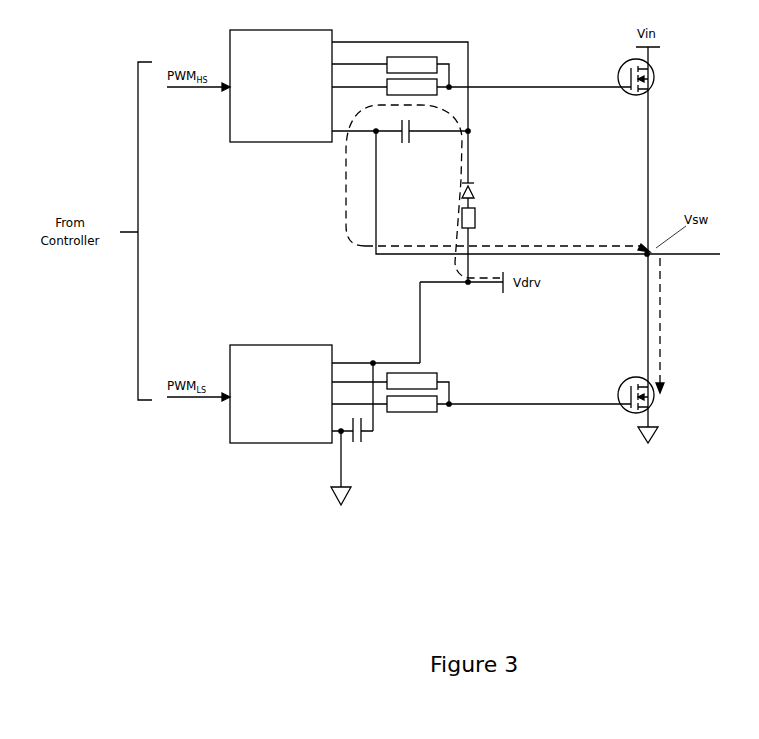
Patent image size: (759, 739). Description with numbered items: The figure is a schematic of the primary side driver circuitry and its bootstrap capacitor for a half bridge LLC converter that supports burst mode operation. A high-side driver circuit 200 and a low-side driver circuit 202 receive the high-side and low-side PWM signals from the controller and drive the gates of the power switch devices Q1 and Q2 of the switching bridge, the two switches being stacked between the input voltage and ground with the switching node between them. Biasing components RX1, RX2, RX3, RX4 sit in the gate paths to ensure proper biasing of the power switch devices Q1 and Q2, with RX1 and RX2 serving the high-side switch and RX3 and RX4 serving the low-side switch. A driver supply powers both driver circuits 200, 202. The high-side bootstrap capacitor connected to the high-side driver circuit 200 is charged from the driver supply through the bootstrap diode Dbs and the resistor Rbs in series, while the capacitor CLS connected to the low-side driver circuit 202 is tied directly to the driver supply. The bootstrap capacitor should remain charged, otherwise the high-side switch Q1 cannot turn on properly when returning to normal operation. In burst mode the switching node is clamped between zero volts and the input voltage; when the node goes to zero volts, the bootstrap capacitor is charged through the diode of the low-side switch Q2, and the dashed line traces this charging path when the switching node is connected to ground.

The high-side driver circuit 200 is at (270, 116).
The low-side driver circuit 202 is at (270, 423).
The high-side power switch device Q1 is at (626, 77).
The low-side power switch device Q2 is at (625, 392).
The biasing component RX1 is at (412, 87).
The biasing component RX2 is at (412, 65).
The biasing component RX3 is at (412, 404).
The biasing component RX4 is at (412, 381).
The bootstrap diode Dbs is at (481, 191).
The bootstrap resistor Rbs is at (481, 218).
The low-side capacitor CLS is at (357, 439).